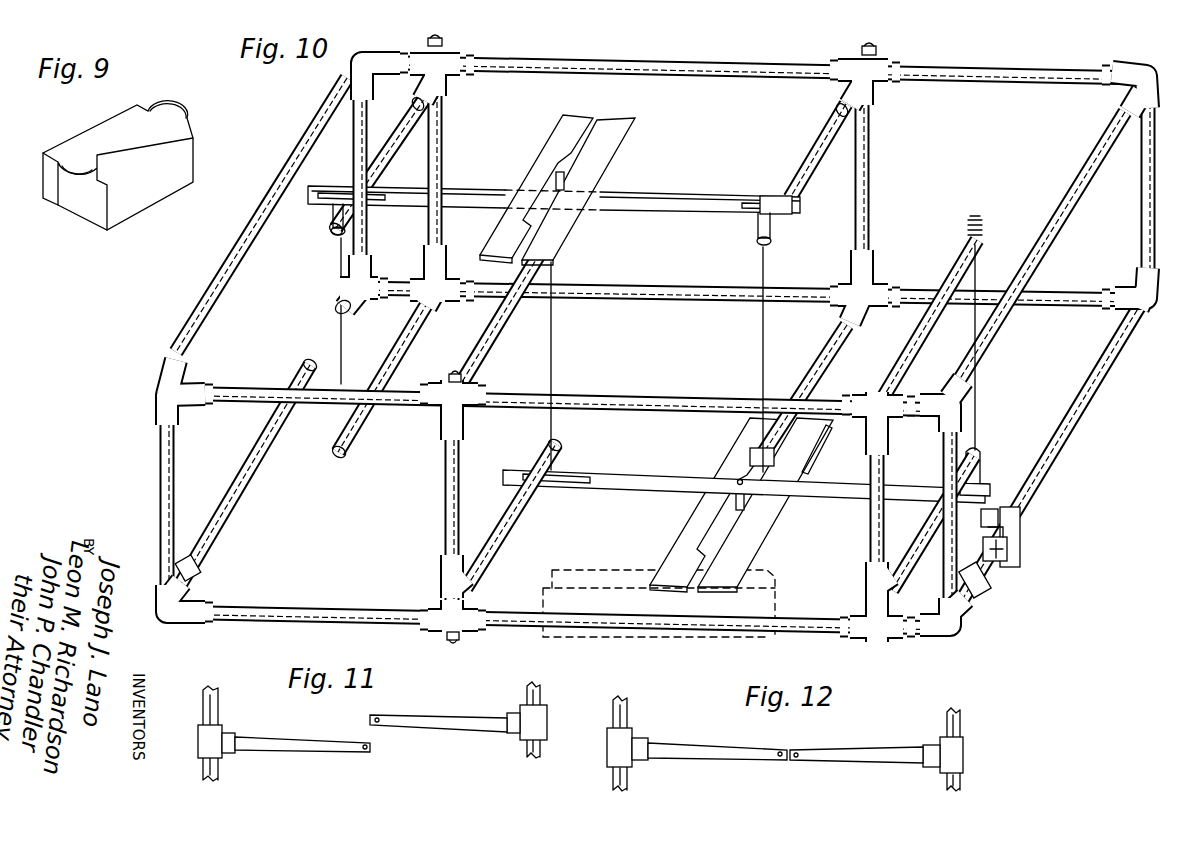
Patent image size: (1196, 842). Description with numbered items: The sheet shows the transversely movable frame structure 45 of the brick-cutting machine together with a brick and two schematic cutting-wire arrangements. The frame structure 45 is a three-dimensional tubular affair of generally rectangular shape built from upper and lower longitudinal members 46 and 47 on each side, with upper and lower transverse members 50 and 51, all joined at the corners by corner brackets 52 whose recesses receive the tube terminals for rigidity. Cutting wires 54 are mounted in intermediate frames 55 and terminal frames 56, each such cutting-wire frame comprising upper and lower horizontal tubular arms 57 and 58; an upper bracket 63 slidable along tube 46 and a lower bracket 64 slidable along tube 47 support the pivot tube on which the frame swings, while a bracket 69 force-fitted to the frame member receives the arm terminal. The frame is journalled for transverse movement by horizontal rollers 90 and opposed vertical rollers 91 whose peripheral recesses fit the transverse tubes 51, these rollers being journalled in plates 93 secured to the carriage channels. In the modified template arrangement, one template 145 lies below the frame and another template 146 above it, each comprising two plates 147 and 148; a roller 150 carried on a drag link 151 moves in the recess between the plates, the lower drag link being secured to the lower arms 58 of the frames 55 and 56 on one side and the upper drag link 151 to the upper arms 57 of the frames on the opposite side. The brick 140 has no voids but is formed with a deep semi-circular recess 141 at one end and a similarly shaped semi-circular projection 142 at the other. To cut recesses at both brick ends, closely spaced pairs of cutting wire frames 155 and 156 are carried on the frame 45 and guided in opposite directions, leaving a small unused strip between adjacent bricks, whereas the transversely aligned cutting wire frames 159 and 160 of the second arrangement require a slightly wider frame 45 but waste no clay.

In FIG. 10, the frame structure 45 is at (300, 141).
In FIG. 11, the frame structure 45 is at (197, 713).
In FIG. 12, the frame structure 45 is at (638, 720).
In FIG. 10, the upper longitudinal member 46 is at (765, 78).
In FIG. 11, the upper longitudinal member 46 is at (218, 712).
In FIG. 12, the upper longitudinal member 46 is at (632, 722).
In FIG. 10, the lower longitudinal member 47 is at (713, 303).
In FIG. 10, the upper transverse member 50 is at (256, 248).
In FIG. 10, the lower transverse member 51 is at (258, 480).
In FIG. 10, the corner bracket 52 is at (1147, 68).
In FIG. 10, the cutting wire 54 is at (343, 363).
In FIG. 10, the intermediate frame 55 is at (795, 171).
In FIG. 10, the terminal frame 56 is at (389, 180).
In FIG. 10, the upper horizontal tubular arm 57 is at (410, 104).
In FIG. 10, the lower horizontal tubular arm 58 is at (414, 318).
In FIG. 10, the upper bracket 63 is at (455, 373).
In FIG. 10, the lower bracket 64 is at (474, 636).
In FIG. 10, the bracket 69 is at (833, 97).
In FIG. 10, the horizontal roller 90 is at (988, 509).
In FIG. 10, the vertical roller 91 is at (1022, 556).
In FIG. 10, the plate 93 is at (1022, 538).
In FIG. 9, the brick 140 is at (156, 209).
In FIG. 9, the semi-circular recess 141 is at (77, 195).
In FIG. 9, the semi-circular projection 142 is at (194, 118).
In FIG. 10, the template 145 is at (792, 517).
In FIG. 10, the template 146 is at (629, 161).
In FIG. 10, the plate 147 is at (543, 153).
In FIG. 10, the plate 148 is at (633, 120).
In FIG. 10, the roller 150 is at (577, 138).
In FIG. 10, the drag link 151 is at (660, 193).
In FIG. 11, the cutting wire frame 155 is at (307, 741).
In FIG. 11, the cutting wire frame 156 is at (450, 717).
In FIG. 12, the cutting wire frame 159 is at (710, 745).
In FIG. 12, the cutting wire frame 160 is at (847, 750).